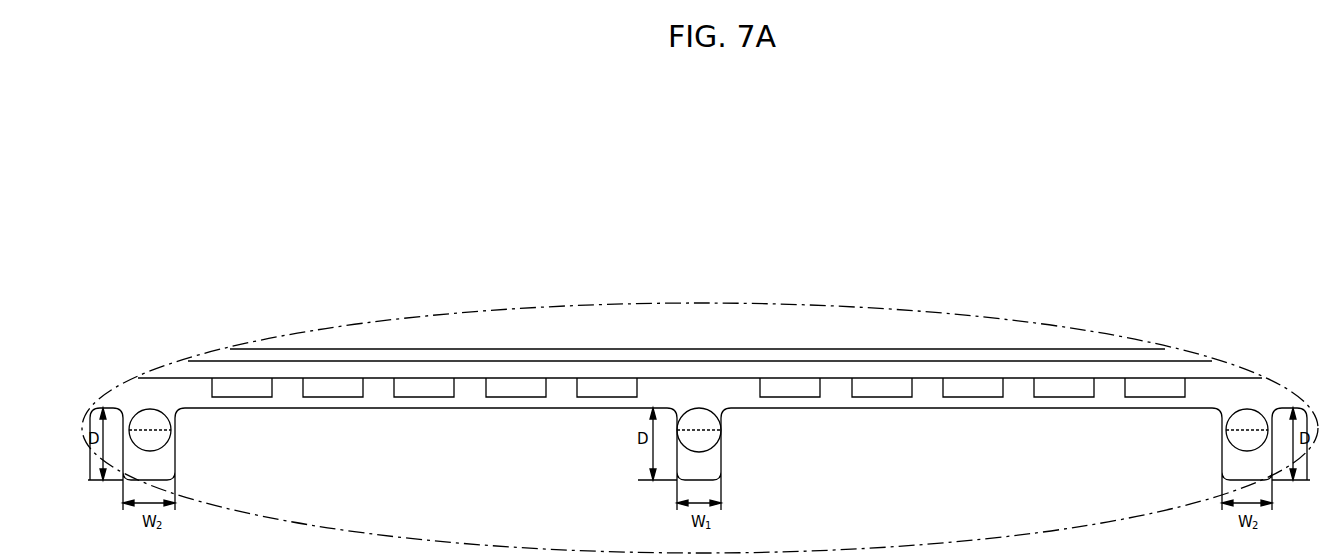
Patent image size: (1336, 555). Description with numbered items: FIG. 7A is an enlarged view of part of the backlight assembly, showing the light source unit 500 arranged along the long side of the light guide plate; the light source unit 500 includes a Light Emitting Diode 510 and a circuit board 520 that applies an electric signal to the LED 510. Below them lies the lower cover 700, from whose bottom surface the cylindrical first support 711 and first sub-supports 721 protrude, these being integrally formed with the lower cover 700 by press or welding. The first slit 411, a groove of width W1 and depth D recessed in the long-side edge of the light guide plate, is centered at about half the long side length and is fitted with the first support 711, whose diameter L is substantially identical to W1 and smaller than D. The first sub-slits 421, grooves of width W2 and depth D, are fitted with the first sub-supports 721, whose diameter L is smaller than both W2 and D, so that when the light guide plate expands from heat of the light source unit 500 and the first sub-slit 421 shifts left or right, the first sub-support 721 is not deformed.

The light source unit 500 is at (397, 270).
The Light Emitting Diode (LED) 510 is at (328, 387).
The circuit board 520 is at (378, 372).
The lower cover 700 is at (470, 353).
The first sub-support 721 is at (170, 436).
The first support 711 is at (721, 436).
The first sub-slit 421 is at (148, 458).
The first slit 411 is at (700, 458).